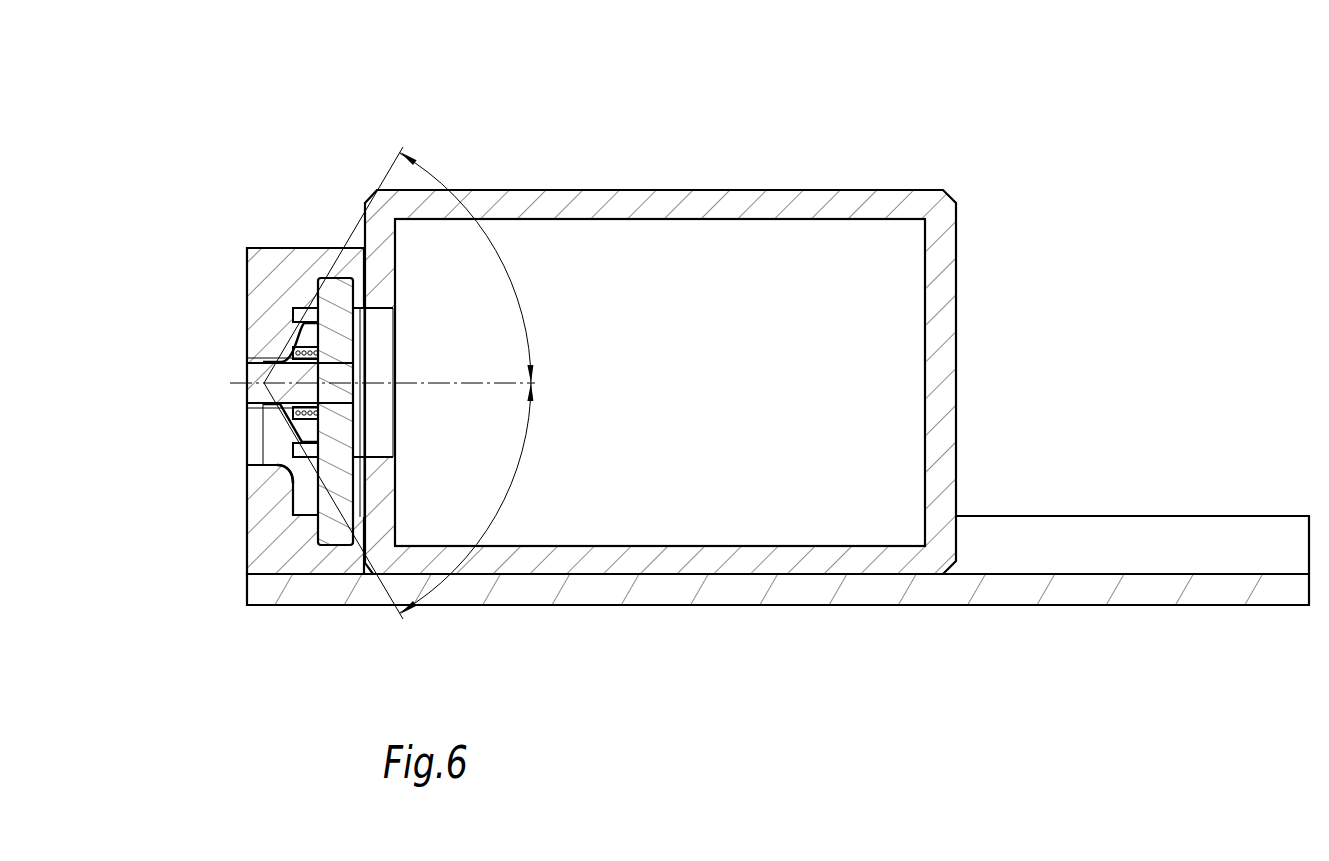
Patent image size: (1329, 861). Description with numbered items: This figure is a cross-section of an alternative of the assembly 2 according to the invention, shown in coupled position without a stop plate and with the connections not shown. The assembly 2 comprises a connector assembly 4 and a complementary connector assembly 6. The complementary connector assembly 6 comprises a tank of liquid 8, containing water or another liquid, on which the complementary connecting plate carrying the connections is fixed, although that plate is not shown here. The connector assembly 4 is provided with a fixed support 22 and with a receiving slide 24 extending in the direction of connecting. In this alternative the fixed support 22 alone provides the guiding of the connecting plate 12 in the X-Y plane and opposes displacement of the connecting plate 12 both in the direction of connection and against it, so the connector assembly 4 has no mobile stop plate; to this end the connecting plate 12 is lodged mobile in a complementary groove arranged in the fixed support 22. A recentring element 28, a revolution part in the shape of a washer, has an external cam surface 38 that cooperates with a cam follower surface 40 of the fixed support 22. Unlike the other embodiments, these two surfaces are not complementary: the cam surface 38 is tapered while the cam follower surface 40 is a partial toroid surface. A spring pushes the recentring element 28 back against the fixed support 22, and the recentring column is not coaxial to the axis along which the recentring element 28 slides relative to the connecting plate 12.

The assembly 2 is at (541, 320).
The connector assembly 4 is at (268, 652).
The complementary connector assembly 6 is at (655, 166).
The tank of liquid 8 is at (660, 382).
The connecting plate 12 is at (340, 287).
The fixed support 22 is at (262, 300).
The receiving slide 24 is at (1058, 594).
The recentring element 28 is at (300, 430).
The cam surface 38 is at (262, 412).
The cam follower surface 40 is at (292, 470).